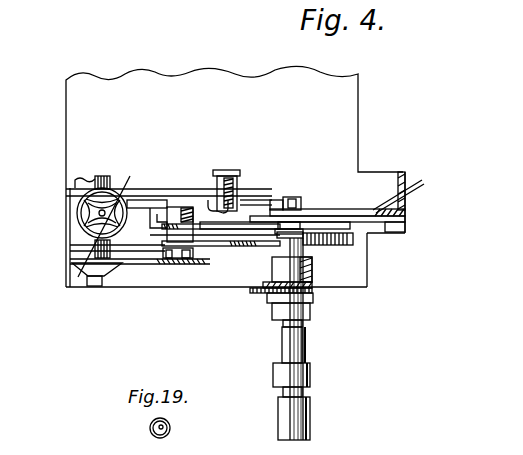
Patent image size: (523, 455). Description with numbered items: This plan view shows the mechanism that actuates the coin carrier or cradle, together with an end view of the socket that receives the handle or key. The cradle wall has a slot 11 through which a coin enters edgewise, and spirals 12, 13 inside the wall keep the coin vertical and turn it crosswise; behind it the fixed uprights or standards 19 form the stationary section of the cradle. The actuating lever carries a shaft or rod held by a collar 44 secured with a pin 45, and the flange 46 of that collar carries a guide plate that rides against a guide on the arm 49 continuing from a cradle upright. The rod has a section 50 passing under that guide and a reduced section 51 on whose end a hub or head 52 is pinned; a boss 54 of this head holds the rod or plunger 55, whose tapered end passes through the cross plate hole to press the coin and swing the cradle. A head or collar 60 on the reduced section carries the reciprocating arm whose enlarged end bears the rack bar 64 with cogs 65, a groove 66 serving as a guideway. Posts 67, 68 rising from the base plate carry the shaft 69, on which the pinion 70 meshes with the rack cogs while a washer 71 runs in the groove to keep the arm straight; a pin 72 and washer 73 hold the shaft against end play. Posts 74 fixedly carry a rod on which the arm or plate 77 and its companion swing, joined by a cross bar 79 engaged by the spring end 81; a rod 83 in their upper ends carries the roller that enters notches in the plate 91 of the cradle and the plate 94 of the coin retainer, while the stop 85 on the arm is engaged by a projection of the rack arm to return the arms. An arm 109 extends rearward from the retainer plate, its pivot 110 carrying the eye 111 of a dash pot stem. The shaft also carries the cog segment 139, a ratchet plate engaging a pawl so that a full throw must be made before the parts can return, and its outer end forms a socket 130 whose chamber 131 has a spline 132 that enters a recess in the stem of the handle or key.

In FIG. 4, the slot 11 is at (131, 262).
In FIG. 4, the spiral 12 is at (73, 265).
In FIG. 4, the spiral 13 is at (108, 206).
In FIG. 4, the uprights or standards 19 is at (172, 203).
In FIG. 4, the collar 44 is at (186, 248).
In FIG. 4, the pin 45 is at (195, 253).
In FIG. 4, the flange 46 is at (170, 262).
In FIG. 4, the arm 49 is at (268, 250).
In FIG. 4, the shaft section 50 is at (184, 257).
In FIG. 4, the reduced shaft section 51 is at (242, 177).
In FIG. 4, the hub or head 52 is at (194, 207).
In FIG. 4, the boss or extension 54 is at (176, 205).
In FIG. 4, the rod or plunger 55 is at (158, 207).
In FIG. 4, the head or collar 60 is at (270, 199).
In FIG. 4, the rack bar 64 is at (340, 245).
In FIG. 4, the cogs or leaves 65 is at (411, 191).
In FIG. 4, the groove or recess 66 is at (352, 237).
In FIG. 4, the post 67 is at (313, 265).
In FIG. 4, the companion post 68 is at (304, 210).
In FIG. 4, the shaft 69 is at (300, 204).
In FIG. 4, the pinion 70 is at (282, 243).
In FIG. 4, the washer 71 is at (350, 210).
In FIG. 4, the pin 72 is at (282, 197).
In FIG. 4, the washer 73 is at (240, 208).
In FIG. 4, the posts 74 is at (226, 200).
In FIG. 4, the arm or plate 77 is at (234, 172).
In FIG. 4, the cross plate or bar 79 is at (262, 200).
In FIG. 4, the spring end 81 is at (252, 203).
In FIG. 4, the rod 83 is at (240, 195).
In FIG. 4, the stop 85 is at (245, 290).
In FIG. 4, the plate 91 is at (188, 208).
In FIG. 4, the plate 94 is at (190, 207).
In FIG. 4, the arm 109 is at (328, 215).
In FIG. 4, the pivot 110 is at (405, 216).
In FIG. 4, the eye 111 is at (406, 229).
In FIG. 4, the socket 130 is at (303, 356).
In FIG. 19, the socket 130 is at (170, 435).
In FIG. 19, the chamber 131 is at (170, 428).
In FIG. 19, the spline 132 is at (165, 420).
In FIG. 4, the cog segment 139 is at (314, 298).